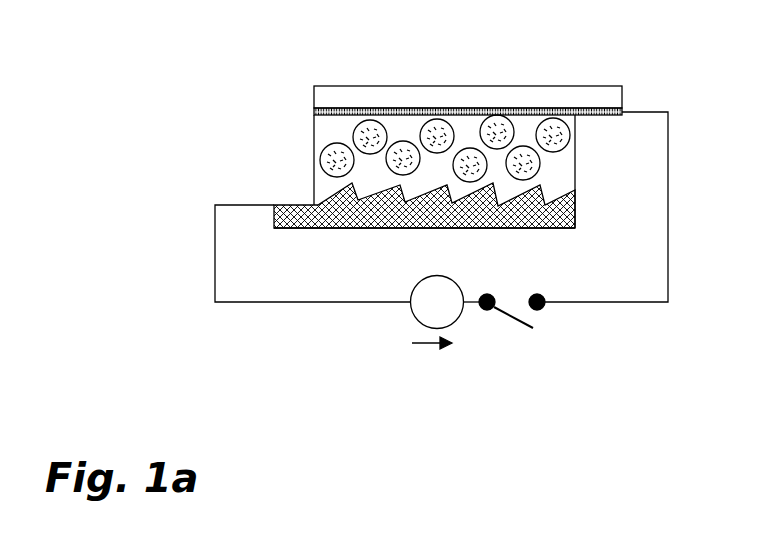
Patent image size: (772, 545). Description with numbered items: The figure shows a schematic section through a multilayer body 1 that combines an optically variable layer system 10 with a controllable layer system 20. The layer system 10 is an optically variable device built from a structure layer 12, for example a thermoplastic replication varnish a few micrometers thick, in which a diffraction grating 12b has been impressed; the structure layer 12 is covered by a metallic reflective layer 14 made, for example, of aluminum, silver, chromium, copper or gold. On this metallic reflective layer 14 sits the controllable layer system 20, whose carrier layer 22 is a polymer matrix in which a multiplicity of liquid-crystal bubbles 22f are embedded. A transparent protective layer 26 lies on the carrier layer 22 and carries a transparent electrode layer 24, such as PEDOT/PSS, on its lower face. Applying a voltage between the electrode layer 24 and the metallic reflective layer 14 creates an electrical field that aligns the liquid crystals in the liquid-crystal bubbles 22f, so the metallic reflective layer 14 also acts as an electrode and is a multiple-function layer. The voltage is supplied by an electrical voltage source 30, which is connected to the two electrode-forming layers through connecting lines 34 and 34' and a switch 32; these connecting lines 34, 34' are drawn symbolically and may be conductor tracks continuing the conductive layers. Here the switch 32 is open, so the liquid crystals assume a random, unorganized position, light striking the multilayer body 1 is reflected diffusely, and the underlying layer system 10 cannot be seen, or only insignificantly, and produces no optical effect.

The multilayer body 1 is at (170, 154).
The optically variable layer system 10 is at (580, 183).
The structure layer 12 is at (530, 230).
The diffraction grating 12b is at (337, 228).
The metallic reflective layer 14 is at (296, 203).
The controllable layer system 20 is at (264, 108).
The carrier layer 22 is at (565, 168).
The liquid-crystal bubbles 22f is at (380, 120).
The electrode layer 24 is at (625, 107).
The transparent protective layer 26 is at (486, 100).
The electrical voltage source 30 is at (438, 345).
The switch 32 is at (516, 328).
The connecting line 34 is at (306, 297).
The connecting line 34' is at (655, 207).